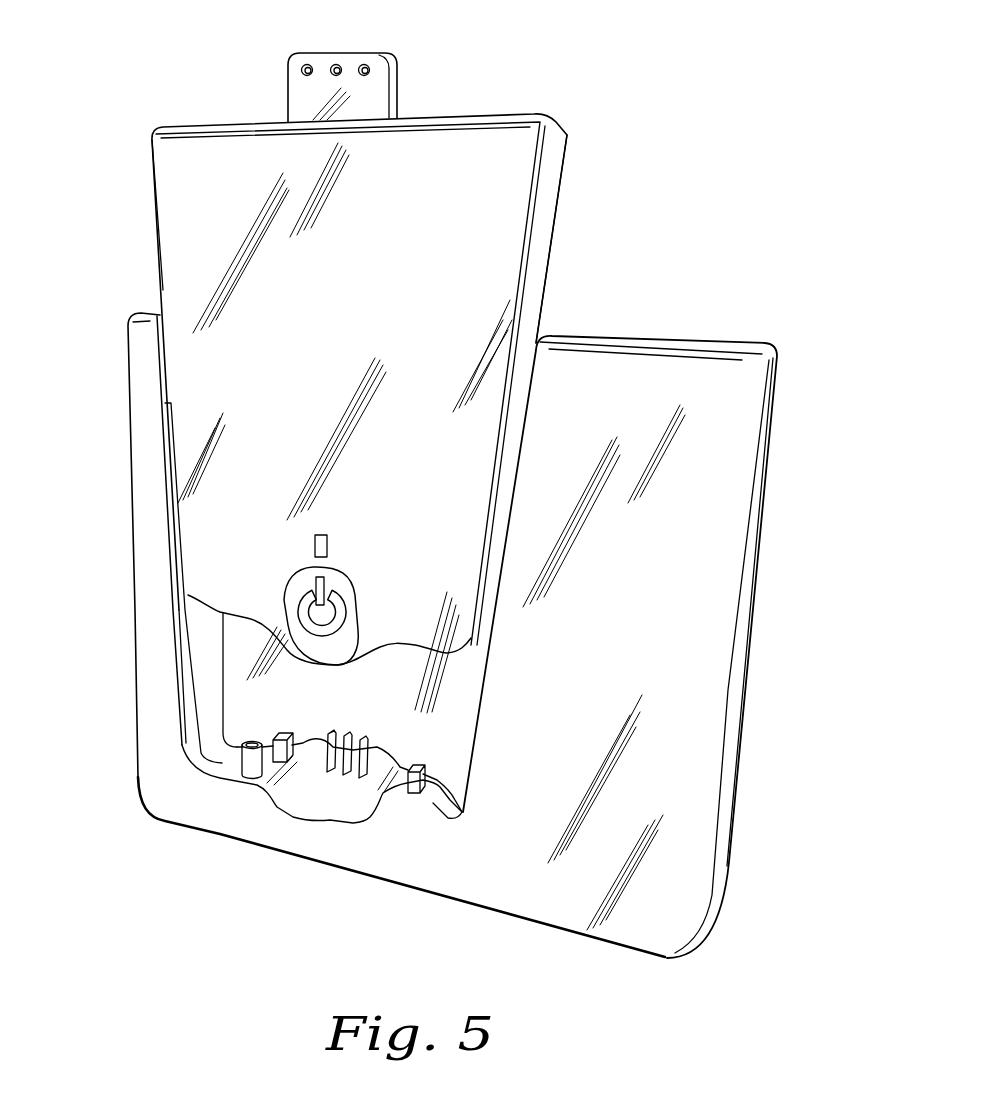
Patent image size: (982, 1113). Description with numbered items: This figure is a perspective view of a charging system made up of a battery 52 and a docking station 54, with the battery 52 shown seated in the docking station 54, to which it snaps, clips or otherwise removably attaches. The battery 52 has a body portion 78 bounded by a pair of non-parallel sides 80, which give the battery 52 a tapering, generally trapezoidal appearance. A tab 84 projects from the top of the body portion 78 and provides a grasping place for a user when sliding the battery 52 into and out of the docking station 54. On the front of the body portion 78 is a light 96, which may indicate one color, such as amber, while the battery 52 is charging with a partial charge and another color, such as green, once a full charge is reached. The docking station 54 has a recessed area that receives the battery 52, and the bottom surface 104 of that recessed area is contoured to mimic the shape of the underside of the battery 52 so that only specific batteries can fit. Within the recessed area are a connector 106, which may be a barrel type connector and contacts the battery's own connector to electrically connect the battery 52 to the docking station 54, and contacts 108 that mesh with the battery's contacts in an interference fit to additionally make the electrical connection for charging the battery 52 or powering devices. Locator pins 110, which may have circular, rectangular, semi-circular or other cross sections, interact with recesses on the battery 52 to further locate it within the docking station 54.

The battery 52 is at (148, 98).
The docking station 54 is at (780, 252).
The body portion 78 is at (537, 250).
The non-parallel sides 80 is at (158, 230).
The tab 84 is at (361, 66).
The light 96 is at (313, 550).
The bottom surface 104 is at (435, 817).
The connector 106 is at (232, 762).
The contacts 108 is at (360, 780).
The locator pins 110 is at (445, 795).